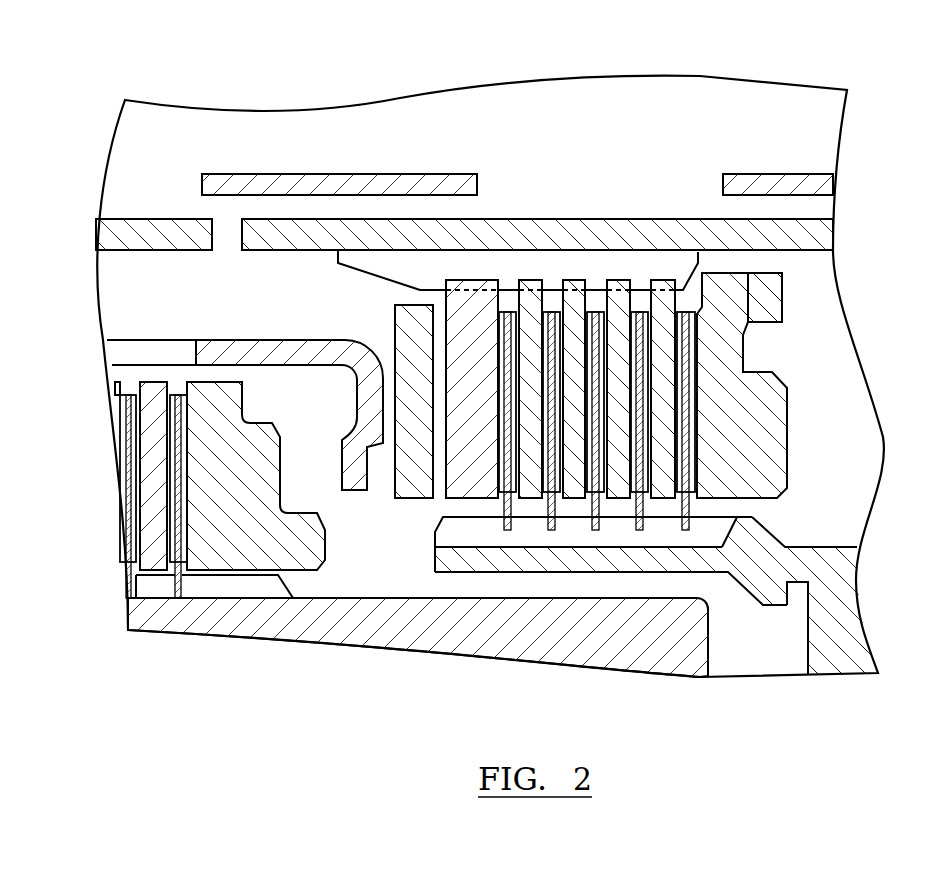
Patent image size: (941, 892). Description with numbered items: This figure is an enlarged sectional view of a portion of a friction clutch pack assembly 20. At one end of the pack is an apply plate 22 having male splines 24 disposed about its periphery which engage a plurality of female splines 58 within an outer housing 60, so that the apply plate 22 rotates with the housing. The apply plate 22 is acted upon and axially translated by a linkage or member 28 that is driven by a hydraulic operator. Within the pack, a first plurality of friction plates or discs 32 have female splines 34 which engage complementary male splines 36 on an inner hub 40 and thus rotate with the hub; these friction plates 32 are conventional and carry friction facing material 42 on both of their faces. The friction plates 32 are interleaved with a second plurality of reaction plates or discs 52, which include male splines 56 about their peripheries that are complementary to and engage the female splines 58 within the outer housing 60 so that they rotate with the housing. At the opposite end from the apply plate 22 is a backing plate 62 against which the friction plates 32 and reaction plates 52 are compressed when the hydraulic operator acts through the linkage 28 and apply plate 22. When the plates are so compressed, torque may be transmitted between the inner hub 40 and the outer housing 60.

The friction clutch pack assembly 20 is at (812, 327).
The apply plate 22 is at (478, 478).
The male splines 24 is at (476, 290).
The linkage or member 28 is at (247, 357).
The friction plates or discs 32 is at (647, 452).
The female splines 34 is at (641, 521).
The male splines 36 is at (705, 533).
The inner hub 40 is at (765, 567).
The friction facing material 42 is at (607, 466).
The reaction plates or discs 52 is at (577, 327).
The male splines 56 is at (573, 292).
The female splines 58 is at (502, 265).
The outer housing 60 is at (702, 230).
The backing plate 62 is at (732, 352).